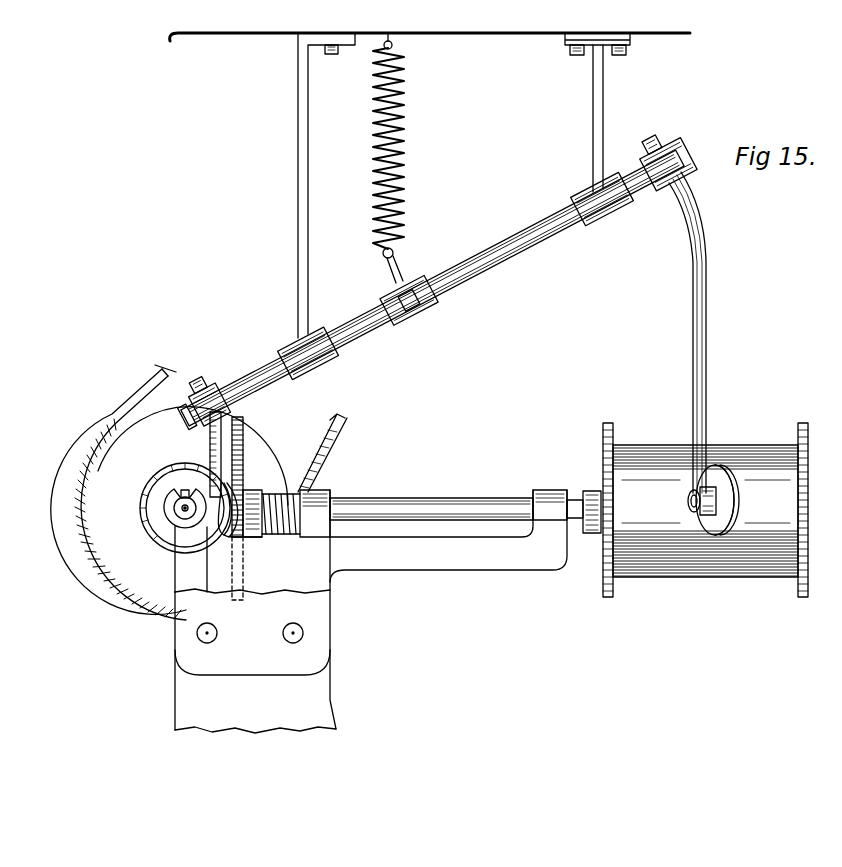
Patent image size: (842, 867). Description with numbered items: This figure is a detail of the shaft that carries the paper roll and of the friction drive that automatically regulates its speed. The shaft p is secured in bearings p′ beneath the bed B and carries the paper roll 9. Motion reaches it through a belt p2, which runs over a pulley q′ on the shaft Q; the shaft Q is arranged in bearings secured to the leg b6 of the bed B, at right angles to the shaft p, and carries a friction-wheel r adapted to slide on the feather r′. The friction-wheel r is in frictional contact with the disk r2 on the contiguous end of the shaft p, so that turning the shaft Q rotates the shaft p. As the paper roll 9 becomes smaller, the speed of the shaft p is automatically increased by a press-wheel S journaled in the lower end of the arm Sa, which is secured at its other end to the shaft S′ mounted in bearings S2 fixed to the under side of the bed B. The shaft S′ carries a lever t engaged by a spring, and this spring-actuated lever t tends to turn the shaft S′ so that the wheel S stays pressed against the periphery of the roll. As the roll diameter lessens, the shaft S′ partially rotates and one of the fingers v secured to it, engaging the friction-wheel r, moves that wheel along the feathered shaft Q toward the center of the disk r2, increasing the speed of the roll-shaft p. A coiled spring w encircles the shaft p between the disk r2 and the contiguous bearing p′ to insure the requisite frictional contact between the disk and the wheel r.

The bed B is at (527, 35).
The coiled spring w is at (273, 548).
The shaft S′ is at (432, 289).
The bearings S2 is at (583, 192).
The lever t is at (401, 257).
The arm Sa is at (687, 309).
The belt p2 is at (190, 410).
The finger v is at (210, 456).
The disk r2 is at (242, 475).
The pulley q′ is at (93, 521).
The friction-wheel r is at (156, 508).
The feather r′ is at (183, 494).
The shaft Q is at (186, 514).
The leg b6 is at (255, 611).
The bearings p′ is at (333, 490).
The shaft p is at (439, 499).
The paper roll 9 is at (705, 509).
The press-wheel S is at (736, 497).